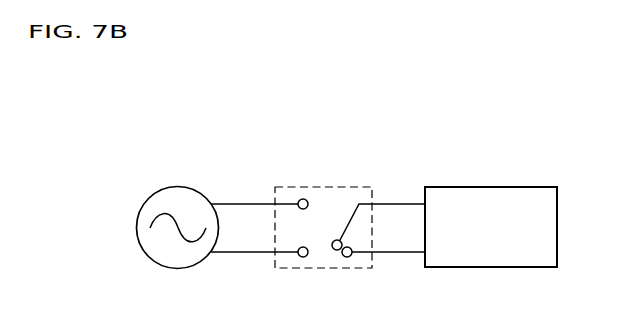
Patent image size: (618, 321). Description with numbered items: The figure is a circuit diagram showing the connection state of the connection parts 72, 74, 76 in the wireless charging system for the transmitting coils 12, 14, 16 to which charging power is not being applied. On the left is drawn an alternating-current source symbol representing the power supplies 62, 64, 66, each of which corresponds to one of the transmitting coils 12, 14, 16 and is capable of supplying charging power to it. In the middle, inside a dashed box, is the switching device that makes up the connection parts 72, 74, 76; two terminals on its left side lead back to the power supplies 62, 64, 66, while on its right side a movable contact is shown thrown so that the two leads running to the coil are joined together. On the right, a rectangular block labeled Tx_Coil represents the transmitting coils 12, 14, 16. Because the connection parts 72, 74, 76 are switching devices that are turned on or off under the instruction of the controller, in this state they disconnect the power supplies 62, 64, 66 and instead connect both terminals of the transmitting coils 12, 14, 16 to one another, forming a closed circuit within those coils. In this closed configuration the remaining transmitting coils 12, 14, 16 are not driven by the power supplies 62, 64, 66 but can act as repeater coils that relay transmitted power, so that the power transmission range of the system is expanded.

The power supply unit 62 is at (170, 191).
The power supply unit 64 is at (170, 191).
The power supply unit 66 is at (152, 192).
The connection part 72 is at (346, 175).
The connection part 74 is at (346, 175).
The connection part 76 is at (325, 187).
The transmitting coil 12 is at (491, 177).
The transmitting coil 14 is at (491, 177).
The transmitting coil 16 is at (490, 187).